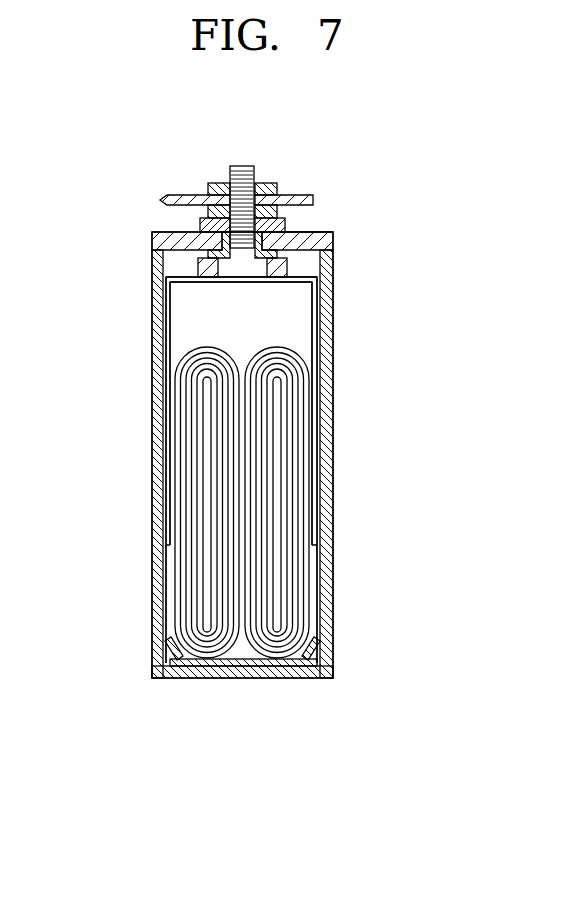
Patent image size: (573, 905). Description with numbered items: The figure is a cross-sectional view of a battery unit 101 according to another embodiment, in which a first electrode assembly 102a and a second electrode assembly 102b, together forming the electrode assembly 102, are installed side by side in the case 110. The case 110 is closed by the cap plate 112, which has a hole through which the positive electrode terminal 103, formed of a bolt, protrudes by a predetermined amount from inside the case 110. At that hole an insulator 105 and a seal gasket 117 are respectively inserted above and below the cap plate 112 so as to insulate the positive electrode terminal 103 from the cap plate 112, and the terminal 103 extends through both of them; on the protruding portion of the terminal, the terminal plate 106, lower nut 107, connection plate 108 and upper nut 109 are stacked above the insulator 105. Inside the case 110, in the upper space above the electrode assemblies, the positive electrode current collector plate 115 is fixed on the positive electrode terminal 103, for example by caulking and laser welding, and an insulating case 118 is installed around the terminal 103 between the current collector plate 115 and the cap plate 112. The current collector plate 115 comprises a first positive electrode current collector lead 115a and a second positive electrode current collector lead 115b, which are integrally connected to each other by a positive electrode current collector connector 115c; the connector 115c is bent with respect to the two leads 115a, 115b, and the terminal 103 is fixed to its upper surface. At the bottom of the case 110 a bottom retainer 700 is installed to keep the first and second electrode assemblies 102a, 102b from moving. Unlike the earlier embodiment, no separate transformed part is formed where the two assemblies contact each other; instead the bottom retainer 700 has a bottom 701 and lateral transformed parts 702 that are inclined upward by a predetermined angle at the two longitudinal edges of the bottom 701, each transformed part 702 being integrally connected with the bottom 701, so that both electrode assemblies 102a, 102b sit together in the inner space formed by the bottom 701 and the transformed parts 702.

The secondary battery 101 is at (186, 171).
The electrode assembly 102 is at (265, 604).
The first electrode assembly 102a is at (218, 670).
The second electrode assembly 102b is at (292, 672).
The positive electrode terminal 103 is at (242, 165).
The insulator 105 is at (333, 232).
The terminal plate 106 is at (287, 225).
The lower nut 107 is at (287, 215).
The connection plate / tab 108 is at (313, 200).
The upper nut 109 is at (277, 185).
The case 110 is at (327, 441).
The cap plate 112 is at (333, 243).
The positive electrode current collector plate 115 is at (248, 470).
The first positive electrode current collector lead 115a is at (172, 349).
The second positive electrode current collector lead 115b is at (313, 355).
The positive electrode current collector connector 115c is at (275, 283).
The seal gasket 117 is at (207, 253).
The insulating case 118 is at (217, 265).
The bottom retainer 700 is at (242, 712).
The bottom 701 is at (205, 668).
The transformed parts 702 is at (188, 674).